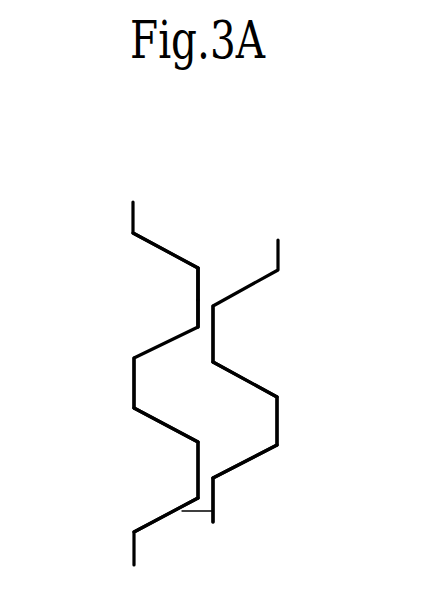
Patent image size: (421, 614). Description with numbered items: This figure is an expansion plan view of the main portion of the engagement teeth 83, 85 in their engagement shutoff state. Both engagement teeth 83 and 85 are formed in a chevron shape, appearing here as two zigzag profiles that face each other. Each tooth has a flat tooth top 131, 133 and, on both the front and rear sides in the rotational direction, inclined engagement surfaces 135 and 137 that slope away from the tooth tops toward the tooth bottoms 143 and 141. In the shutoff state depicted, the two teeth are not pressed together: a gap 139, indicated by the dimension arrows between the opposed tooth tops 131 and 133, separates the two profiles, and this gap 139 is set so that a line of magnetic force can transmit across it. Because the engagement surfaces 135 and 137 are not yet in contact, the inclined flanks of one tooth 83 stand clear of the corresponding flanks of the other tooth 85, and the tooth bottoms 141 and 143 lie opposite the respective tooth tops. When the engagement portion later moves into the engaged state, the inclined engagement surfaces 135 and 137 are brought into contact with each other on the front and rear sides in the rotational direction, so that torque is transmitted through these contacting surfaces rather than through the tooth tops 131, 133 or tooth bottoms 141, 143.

The engagement tooth 83 is at (159, 243).
The engagement tooth 85 is at (261, 274).
The tooth top 131 is at (216, 300).
The tooth top 133 is at (189, 318).
The engagement surface 135 is at (183, 262).
The engagement surface 137 is at (213, 304).
The gap 139 is at (198, 294).
The tooth bottom 141 is at (143, 369).
The tooth bottom 143 is at (257, 384).